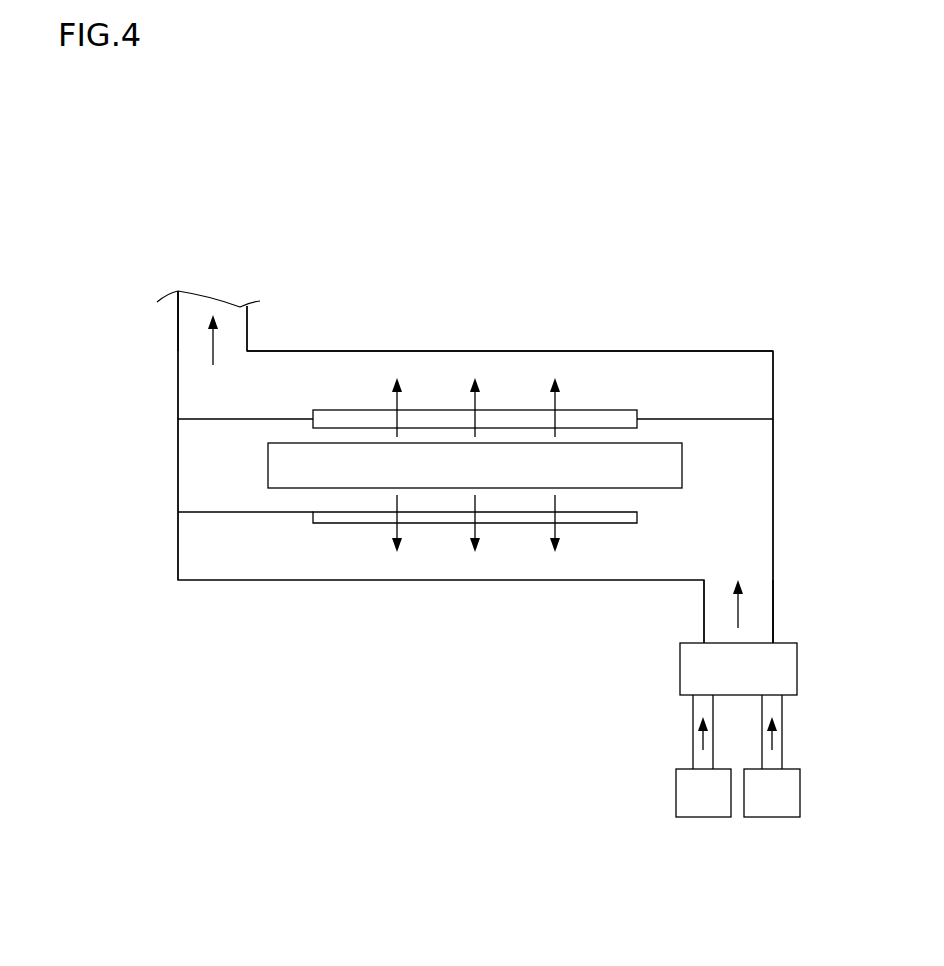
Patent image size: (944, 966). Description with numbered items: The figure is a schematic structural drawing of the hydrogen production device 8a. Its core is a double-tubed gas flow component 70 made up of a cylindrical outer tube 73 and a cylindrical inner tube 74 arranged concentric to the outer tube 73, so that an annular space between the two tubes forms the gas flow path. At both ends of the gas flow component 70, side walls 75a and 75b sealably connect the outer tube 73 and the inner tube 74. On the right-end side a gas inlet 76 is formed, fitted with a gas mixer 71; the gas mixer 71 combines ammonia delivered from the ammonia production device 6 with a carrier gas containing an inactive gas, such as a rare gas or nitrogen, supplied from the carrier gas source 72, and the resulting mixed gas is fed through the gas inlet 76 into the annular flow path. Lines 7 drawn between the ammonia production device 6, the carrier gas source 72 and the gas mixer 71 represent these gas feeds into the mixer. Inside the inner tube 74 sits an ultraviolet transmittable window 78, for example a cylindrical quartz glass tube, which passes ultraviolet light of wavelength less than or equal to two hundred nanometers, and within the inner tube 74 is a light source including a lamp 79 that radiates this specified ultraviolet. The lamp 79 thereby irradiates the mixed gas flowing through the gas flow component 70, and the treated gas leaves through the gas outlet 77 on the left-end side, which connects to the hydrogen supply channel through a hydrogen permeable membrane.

The hydrogen production device 8a is at (474, 457).
The gas flow component 70 is at (580, 312).
The outer tube 73 is at (733, 351).
The inner tube 74 is at (727, 419).
The side wall 75a is at (178, 462).
The side wall 75b is at (776, 470).
The gas inlet 76 is at (720, 580).
The gas outlet 77 is at (193, 292).
The ultraviolet transmittable window 78 is at (613, 410).
The lamp 79 is at (676, 465).
The gas mixer 71 is at (787, 670).
The supply pipe 7 is at (696, 706).
The ammonia production device 6 is at (684, 800).
The carrier gas source 72 is at (790, 803).